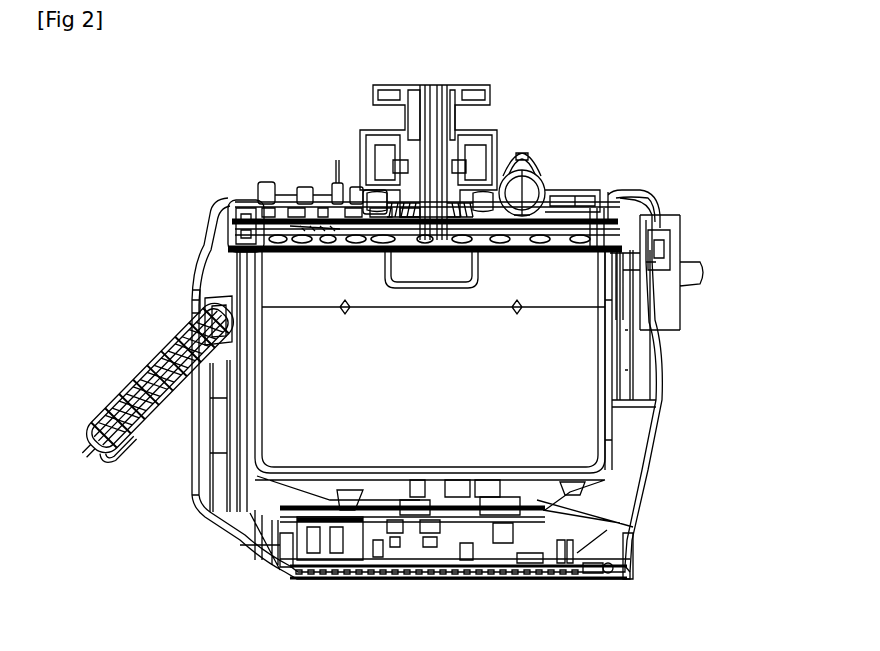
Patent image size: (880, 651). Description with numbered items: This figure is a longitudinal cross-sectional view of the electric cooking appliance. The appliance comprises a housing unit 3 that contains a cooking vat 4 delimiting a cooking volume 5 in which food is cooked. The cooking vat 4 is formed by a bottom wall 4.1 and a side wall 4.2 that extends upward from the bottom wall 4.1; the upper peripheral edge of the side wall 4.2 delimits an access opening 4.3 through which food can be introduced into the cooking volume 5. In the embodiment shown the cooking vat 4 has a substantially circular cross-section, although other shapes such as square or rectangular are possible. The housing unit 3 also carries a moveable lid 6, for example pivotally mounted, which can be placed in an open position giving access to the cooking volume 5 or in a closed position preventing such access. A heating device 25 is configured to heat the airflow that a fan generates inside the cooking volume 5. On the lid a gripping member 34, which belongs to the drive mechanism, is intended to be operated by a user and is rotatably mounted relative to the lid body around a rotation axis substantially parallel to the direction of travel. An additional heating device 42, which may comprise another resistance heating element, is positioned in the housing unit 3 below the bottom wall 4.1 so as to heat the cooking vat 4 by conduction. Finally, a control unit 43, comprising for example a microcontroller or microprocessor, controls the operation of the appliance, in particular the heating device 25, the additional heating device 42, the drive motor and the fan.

The housing unit 3 is at (660, 413).
The cooking vat 4 is at (608, 437).
The bottom wall 4.1 is at (570, 513).
The side wall 4.2 is at (660, 455).
The access opening 4.3 is at (607, 187).
The cooking volume 5 is at (272, 437).
The lid 6 is at (650, 200).
The heating device 25 is at (293, 217).
The gripping member 34 is at (463, 97).
The additional heating device 42 is at (327, 583).
The control unit 43 is at (141, 372).